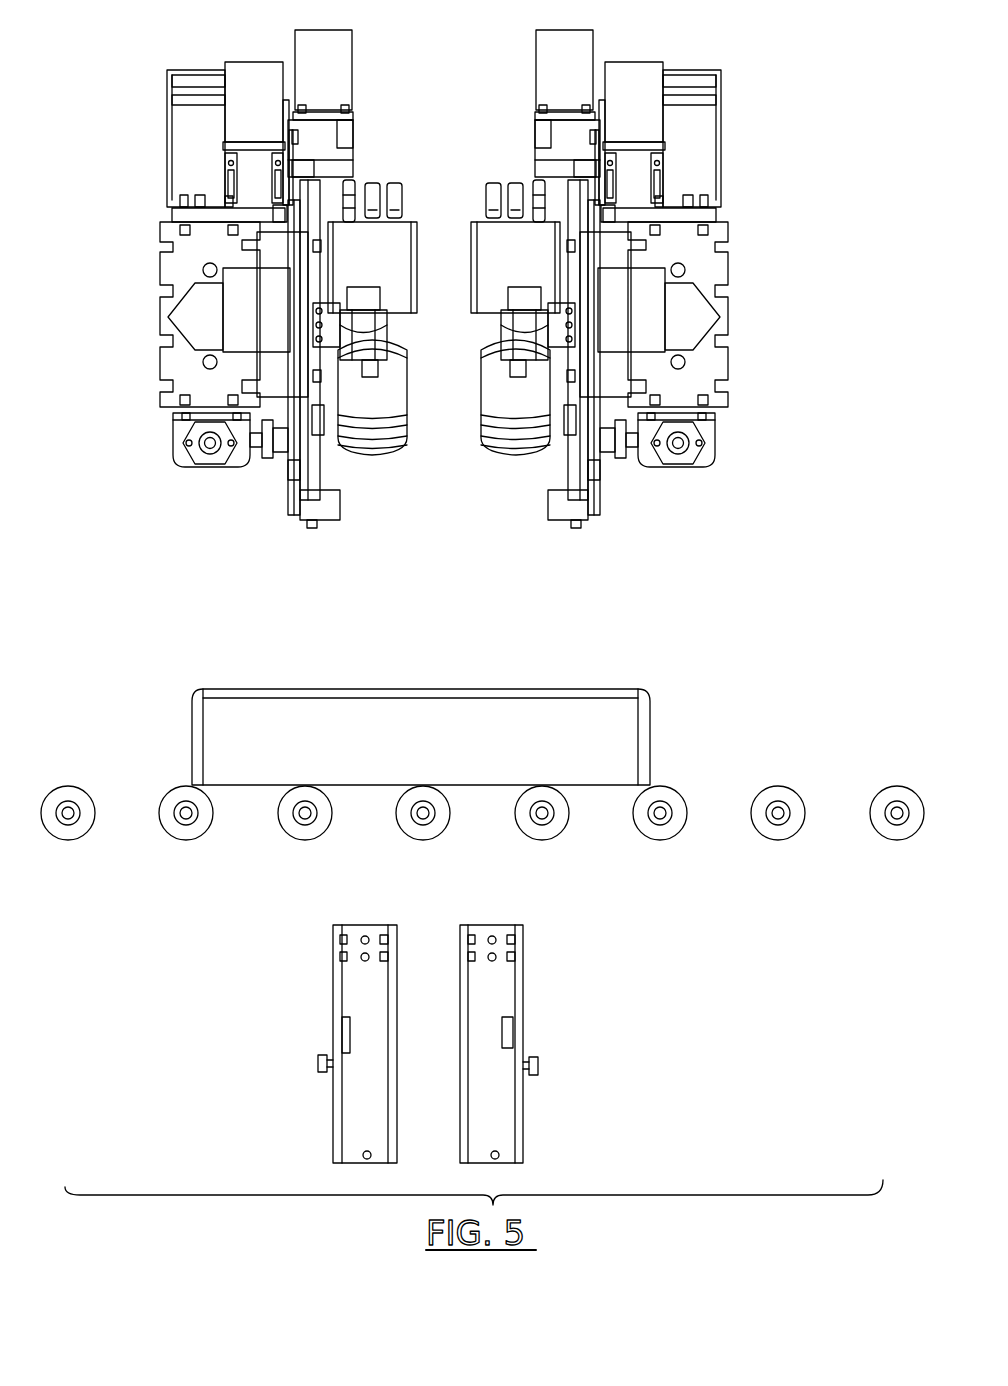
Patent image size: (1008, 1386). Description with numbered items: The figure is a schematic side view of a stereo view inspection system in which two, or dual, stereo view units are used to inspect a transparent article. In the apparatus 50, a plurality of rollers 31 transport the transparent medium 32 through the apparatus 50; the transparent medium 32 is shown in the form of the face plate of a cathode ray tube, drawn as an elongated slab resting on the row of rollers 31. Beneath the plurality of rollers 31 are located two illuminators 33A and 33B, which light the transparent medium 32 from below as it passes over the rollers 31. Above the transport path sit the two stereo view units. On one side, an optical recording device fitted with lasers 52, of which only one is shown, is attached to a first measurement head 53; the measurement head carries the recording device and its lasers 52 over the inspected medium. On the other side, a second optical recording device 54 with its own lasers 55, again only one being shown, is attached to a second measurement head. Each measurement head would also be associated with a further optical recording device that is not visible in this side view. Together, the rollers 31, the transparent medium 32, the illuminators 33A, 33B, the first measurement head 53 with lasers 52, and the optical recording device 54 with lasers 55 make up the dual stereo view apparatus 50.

The rollers 31 is at (310, 832).
The transparent medium 32 is at (551, 688).
The illuminator 33A is at (570, 1005).
The illuminator 33B is at (305, 1001).
The apparatus 50 is at (474, 1065).
The lasers 52 is at (392, 351).
The first measurement head 53 is at (427, 279).
The optical recording device 54 is at (378, 407).
The lasers 55 is at (510, 366).